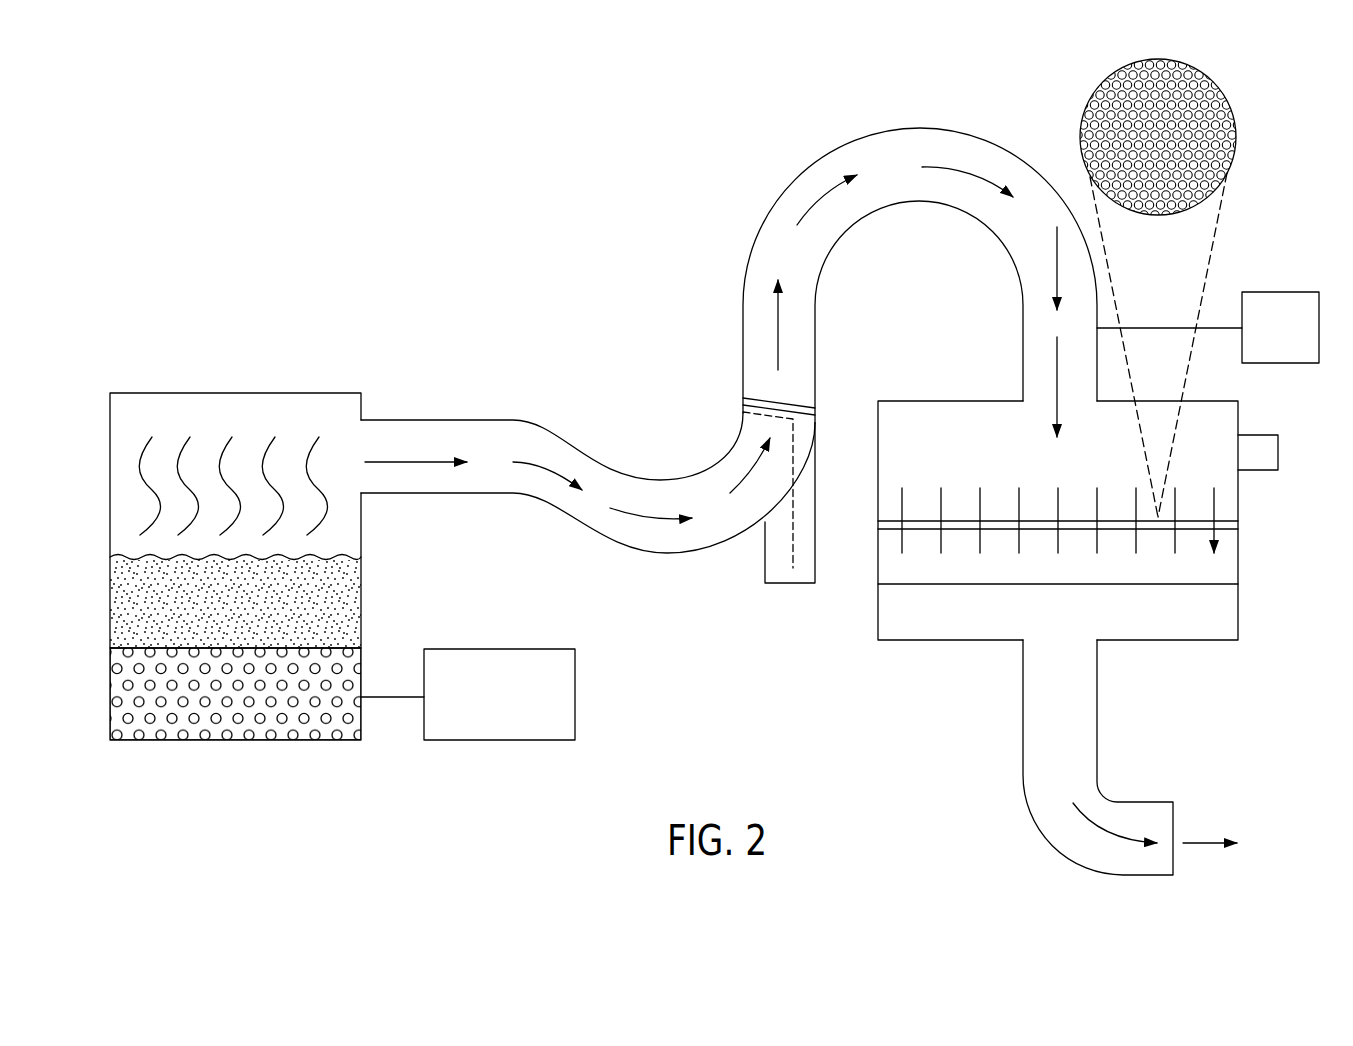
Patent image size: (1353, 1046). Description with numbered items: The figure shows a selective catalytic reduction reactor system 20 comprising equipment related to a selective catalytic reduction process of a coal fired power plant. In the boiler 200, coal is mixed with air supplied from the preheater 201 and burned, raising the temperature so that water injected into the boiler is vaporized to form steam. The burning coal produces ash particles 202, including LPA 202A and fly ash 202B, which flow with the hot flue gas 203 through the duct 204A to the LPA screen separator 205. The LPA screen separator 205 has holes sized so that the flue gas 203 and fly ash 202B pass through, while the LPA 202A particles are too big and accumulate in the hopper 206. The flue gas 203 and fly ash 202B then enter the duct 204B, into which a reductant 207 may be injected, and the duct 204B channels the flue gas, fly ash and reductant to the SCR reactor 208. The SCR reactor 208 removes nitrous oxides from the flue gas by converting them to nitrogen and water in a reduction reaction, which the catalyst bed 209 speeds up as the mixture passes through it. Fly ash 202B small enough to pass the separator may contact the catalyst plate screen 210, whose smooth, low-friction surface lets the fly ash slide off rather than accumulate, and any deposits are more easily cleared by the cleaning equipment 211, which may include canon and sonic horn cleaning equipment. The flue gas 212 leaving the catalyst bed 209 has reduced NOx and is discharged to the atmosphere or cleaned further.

The selective catalytic reduction reactor system 20 is at (485, 198).
The boiler 200 is at (152, 392).
The preheater 201 is at (575, 697).
The ash particles 202 is at (524, 461).
The LPA 202A is at (790, 547).
The fly ash 202B is at (775, 322).
The flue gas 203 is at (828, 190).
The duct 204A is at (598, 452).
The duct 204B is at (758, 213).
The LPA screen separator 205 is at (757, 397).
The hopper 206 is at (815, 586).
The reductant 207 is at (1295, 340).
The SCR reactor 208 is at (900, 401).
The catalyst bed 209 is at (1223, 570).
The catalyst plate screen 210 is at (1228, 517).
The cleaning equipment 211 is at (1253, 460).
The flue gas 212 is at (1200, 840).